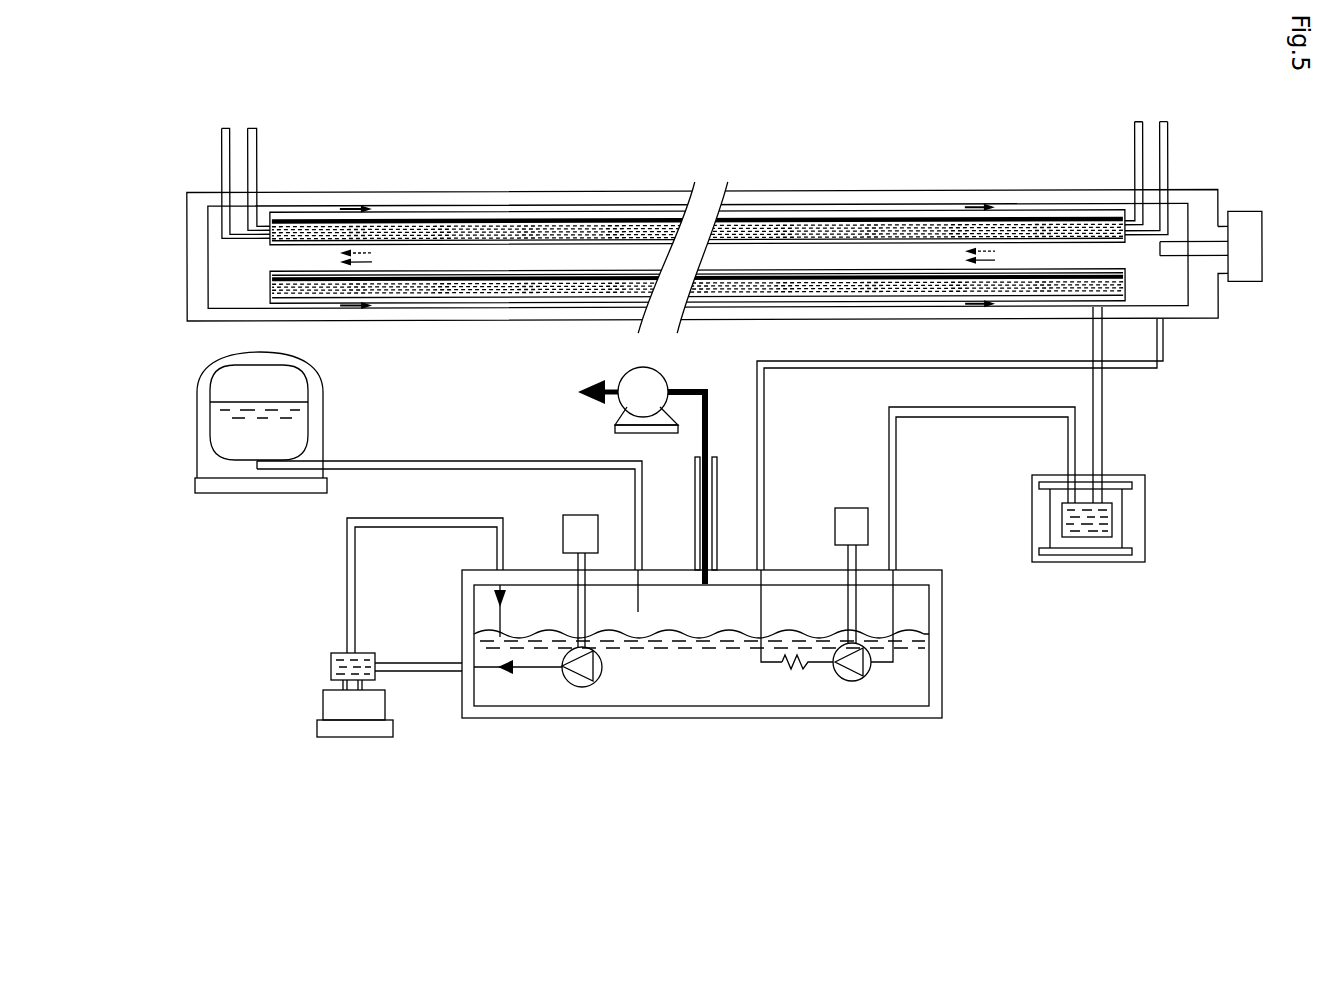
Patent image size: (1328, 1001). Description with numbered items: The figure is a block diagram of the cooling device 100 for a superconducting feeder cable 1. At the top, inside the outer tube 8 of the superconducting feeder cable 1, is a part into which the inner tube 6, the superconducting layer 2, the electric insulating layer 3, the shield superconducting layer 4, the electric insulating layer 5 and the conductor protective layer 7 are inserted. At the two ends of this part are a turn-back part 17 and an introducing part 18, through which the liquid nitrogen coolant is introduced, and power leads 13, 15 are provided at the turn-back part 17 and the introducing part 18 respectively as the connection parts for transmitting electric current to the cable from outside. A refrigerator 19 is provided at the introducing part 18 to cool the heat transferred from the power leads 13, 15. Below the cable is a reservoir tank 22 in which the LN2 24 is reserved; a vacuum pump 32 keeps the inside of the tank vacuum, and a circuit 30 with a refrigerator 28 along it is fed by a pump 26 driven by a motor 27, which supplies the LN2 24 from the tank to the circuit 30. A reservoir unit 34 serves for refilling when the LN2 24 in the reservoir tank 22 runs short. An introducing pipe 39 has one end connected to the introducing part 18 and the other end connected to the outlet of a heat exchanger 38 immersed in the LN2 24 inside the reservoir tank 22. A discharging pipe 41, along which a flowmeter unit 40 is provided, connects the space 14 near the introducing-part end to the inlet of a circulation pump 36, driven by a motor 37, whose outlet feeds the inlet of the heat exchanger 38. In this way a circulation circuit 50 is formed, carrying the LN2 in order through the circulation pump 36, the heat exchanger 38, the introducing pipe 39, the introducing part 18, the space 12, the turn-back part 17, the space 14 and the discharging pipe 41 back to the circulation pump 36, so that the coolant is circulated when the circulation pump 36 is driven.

The superconducting feeder cable 1 is at (566, 172).
The superconducting layer 2 is at (763, 228).
The electric insulating layer 3 is at (785, 224).
The shield superconducting layer 4 is at (810, 220).
The electric insulating layer 5 is at (833, 217).
The inner tube 6 is at (743, 232).
The conductor protective layer 7 is at (855, 212).
The outer tube 8 is at (963, 192).
The space 12 is at (920, 205).
The power lead 13 is at (258, 212).
The space 14 is at (627, 205).
The power lead 15 is at (1130, 211).
The turn-back part 17 is at (230, 290).
The introducing part 18 is at (1185, 290).
The refrigerator 19 is at (1243, 230).
The reservoir tank 22 is at (943, 650).
The LN2 24 is at (712, 698).
The pump 26 is at (582, 684).
The motor 27 is at (565, 521).
The refrigerator 28 is at (386, 705).
The circuit 30 is at (455, 516).
The vacuum pump 32 is at (657, 374).
The reservoir unit 34 is at (323, 399).
The circulation pump 36 is at (852, 681).
The motor 37 is at (851, 507).
The heat exchanger 38 is at (805, 668).
The introducing pipe 39 is at (905, 361).
The flowmeter unit 40 is at (1136, 529).
The discharging pipe 41 is at (1103, 446).
The circulation circuit 50 is at (946, 442).
The cooling device 100 is at (1072, 684).